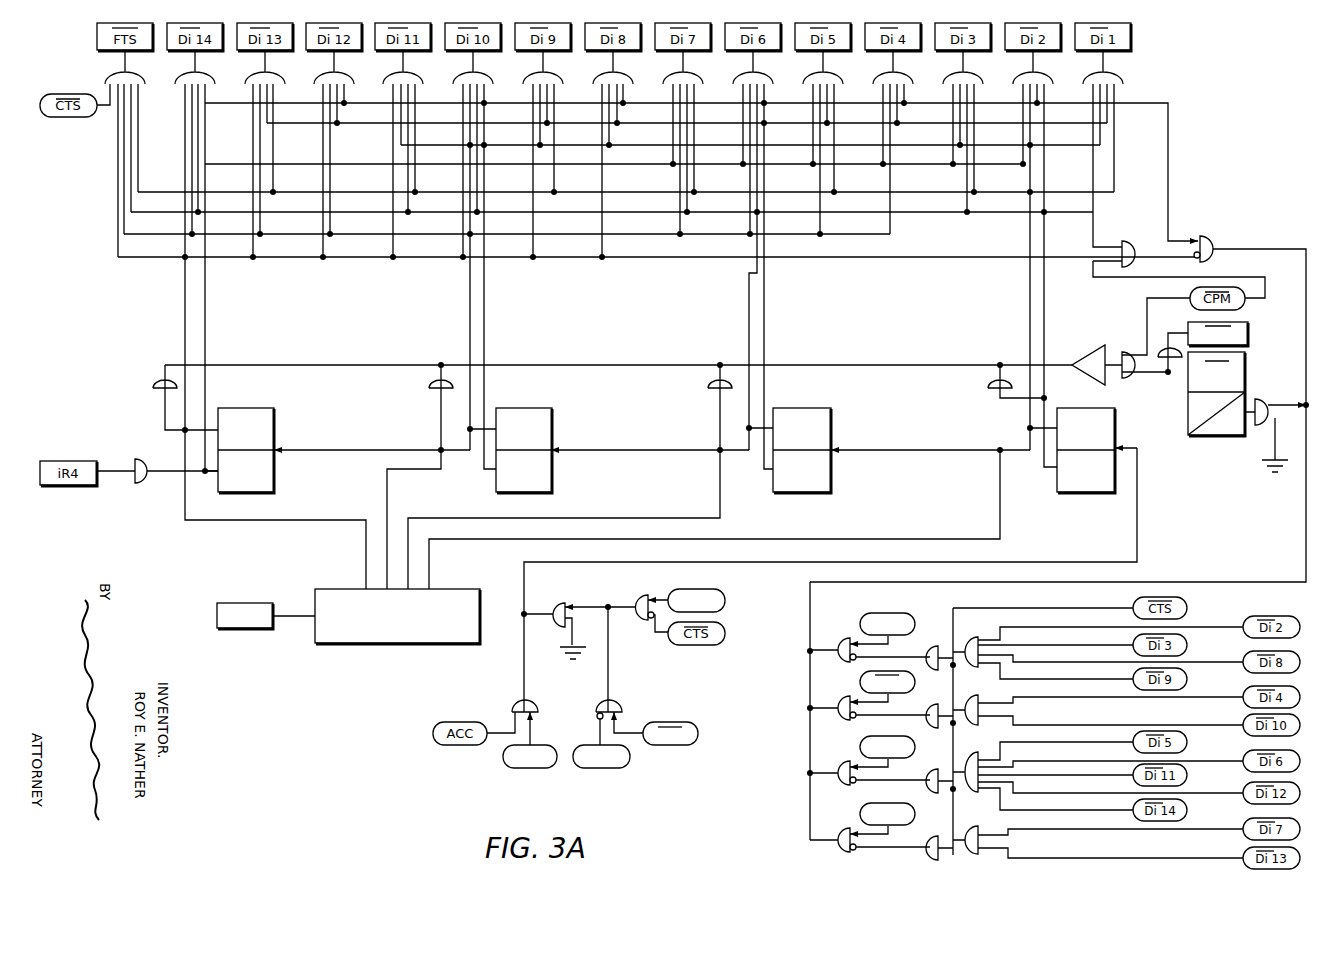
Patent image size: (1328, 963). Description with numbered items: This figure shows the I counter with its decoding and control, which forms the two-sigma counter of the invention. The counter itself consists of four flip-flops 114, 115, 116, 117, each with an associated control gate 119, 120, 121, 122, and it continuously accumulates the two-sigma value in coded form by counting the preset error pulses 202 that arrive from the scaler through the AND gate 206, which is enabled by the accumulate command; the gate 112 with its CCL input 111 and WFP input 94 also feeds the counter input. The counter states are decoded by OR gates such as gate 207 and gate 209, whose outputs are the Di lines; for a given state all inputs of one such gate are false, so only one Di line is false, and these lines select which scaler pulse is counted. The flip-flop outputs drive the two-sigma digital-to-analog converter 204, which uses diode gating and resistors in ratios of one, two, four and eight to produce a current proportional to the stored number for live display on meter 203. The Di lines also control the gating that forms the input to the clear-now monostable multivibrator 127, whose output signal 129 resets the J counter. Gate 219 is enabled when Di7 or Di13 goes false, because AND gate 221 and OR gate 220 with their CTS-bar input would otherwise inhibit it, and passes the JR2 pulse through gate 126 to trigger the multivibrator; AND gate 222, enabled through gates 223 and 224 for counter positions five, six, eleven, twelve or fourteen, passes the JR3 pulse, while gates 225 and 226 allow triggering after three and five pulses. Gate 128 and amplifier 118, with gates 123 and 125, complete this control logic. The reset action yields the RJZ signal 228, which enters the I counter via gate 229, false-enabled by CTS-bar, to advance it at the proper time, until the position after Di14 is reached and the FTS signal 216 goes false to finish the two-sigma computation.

The FTS gate 216 is at (150, 52).
The OR gate 209 is at (478, 78).
The OR gate 207 is at (688, 78).
The gate 123 is at (1125, 241).
The gate 125 is at (1215, 238).
The amplifier 118 is at (1090, 350).
The gate 128 is at (1126, 352).
The CLN output signal 129 is at (1250, 334).
The gate 126 is at (1258, 400).
The CLN monostable multivibrator 127 is at (1220, 436).
The gate 122 is at (153, 388).
The gate 121 is at (429, 388).
The gate 120 is at (708, 388).
The gate 119 is at (988, 388).
The flip-flop 117 is at (275, 486).
The flip-flop 116 is at (552, 486).
The flip-flop 115 is at (832, 486).
The flip-flop 114 is at (1068, 494).
The meter 203 is at (248, 628).
The two-sigma digital-to-analog converter 204 is at (412, 644).
The gate 229 is at (638, 600).
The RJZ signal 228 is at (726, 600).
The AND gate 206 is at (540, 710).
The gate 112 is at (620, 708).
The CCL signal 111 is at (700, 730).
The WFP signal 94 is at (632, 758).
The preset error pulses 202 is at (548, 768).
The gate 226 is at (838, 638).
The gate 225 is at (838, 698).
The AND gate 222 is at (838, 765).
The gate 219 is at (836, 848).
The gate 224 is at (934, 770).
The OR gate 220 is at (930, 852).
The gate 223 is at (966, 758).
The AND gate 221 is at (974, 838).